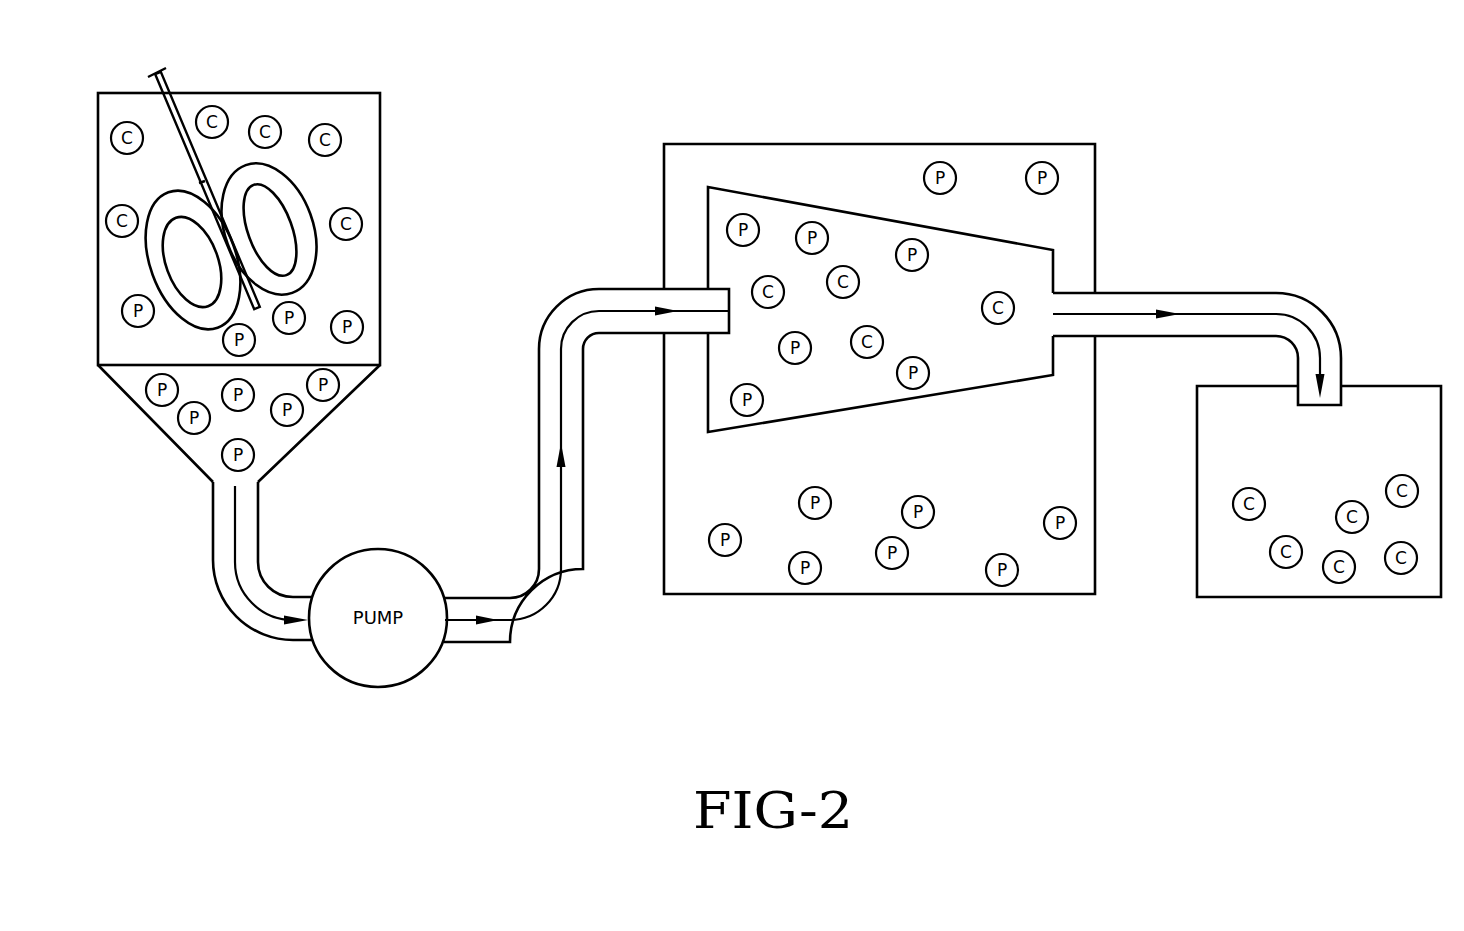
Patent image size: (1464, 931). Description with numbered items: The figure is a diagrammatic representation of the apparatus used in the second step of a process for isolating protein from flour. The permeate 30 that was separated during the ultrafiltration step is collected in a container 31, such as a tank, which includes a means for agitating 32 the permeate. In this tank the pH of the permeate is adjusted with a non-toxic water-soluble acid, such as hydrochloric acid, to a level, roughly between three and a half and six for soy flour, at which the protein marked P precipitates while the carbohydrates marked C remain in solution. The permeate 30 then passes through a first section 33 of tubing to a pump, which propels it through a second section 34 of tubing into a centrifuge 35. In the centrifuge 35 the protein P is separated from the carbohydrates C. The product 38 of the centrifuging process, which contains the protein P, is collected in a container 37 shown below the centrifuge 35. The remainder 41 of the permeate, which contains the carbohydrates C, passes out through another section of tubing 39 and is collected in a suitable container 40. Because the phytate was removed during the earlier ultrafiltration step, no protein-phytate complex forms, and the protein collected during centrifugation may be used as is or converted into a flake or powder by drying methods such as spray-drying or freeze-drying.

The permeate 30 is at (355, 167).
The container 31 is at (378, 303).
The means for agitating 32 is at (168, 83).
The first section of tubing 33 is at (217, 583).
The second section of tubing 34 is at (528, 587).
The centrifuge 35 is at (762, 195).
The container 37 is at (723, 594).
The product 38 is at (947, 548).
The section of tubing 39 is at (1211, 292).
The container 40 is at (1275, 599).
The remainder 41 is at (1307, 582).